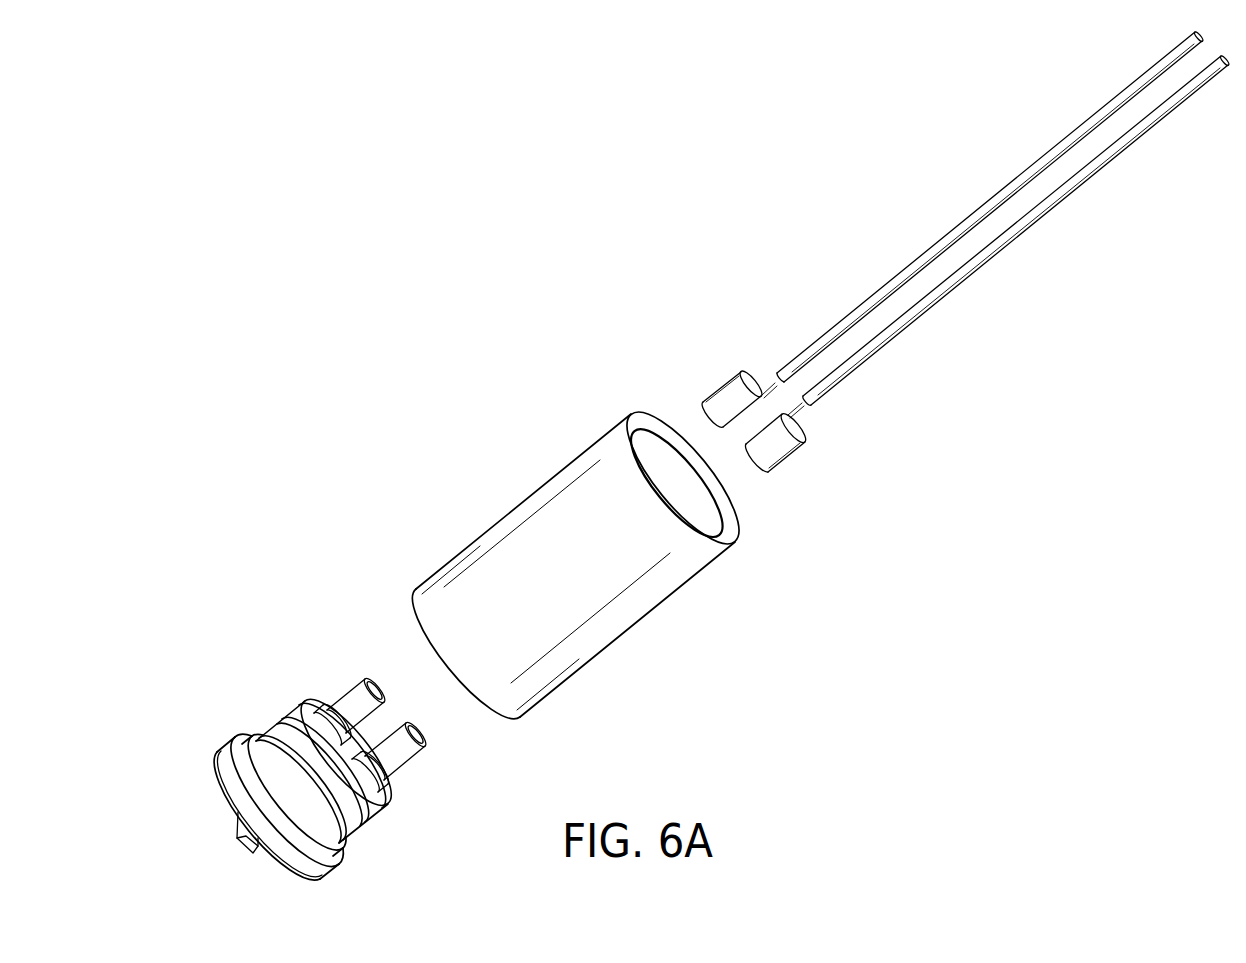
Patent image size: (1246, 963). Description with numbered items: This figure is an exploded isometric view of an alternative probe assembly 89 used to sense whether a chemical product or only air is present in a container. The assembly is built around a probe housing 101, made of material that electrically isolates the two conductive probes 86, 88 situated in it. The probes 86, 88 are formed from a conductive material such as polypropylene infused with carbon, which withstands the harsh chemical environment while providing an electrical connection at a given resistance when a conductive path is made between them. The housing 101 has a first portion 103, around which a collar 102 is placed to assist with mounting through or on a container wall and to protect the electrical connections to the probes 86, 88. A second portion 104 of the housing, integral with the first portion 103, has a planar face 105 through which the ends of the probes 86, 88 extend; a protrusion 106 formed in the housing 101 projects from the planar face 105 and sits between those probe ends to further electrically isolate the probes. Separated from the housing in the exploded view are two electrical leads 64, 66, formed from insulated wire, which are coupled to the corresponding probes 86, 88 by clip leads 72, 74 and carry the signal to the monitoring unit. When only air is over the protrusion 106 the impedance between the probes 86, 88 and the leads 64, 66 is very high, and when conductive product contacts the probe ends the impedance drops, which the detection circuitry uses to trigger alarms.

The probe assembly 89 is at (450, 370).
The probe housing 101 is at (282, 697).
The collar 102 is at (528, 497).
The first portion of the housing 103 is at (347, 818).
The second portion of the housing 104 is at (222, 748).
The planar face 105 is at (293, 868).
The protrusion 106 is at (240, 852).
The conductive probe 86 is at (348, 682).
The conductive probe 88 is at (413, 762).
The electrical lead 64 is at (833, 330).
The electrical lead 66 is at (867, 353).
The clip lead 72 is at (723, 382).
The clip lead 74 is at (788, 457).